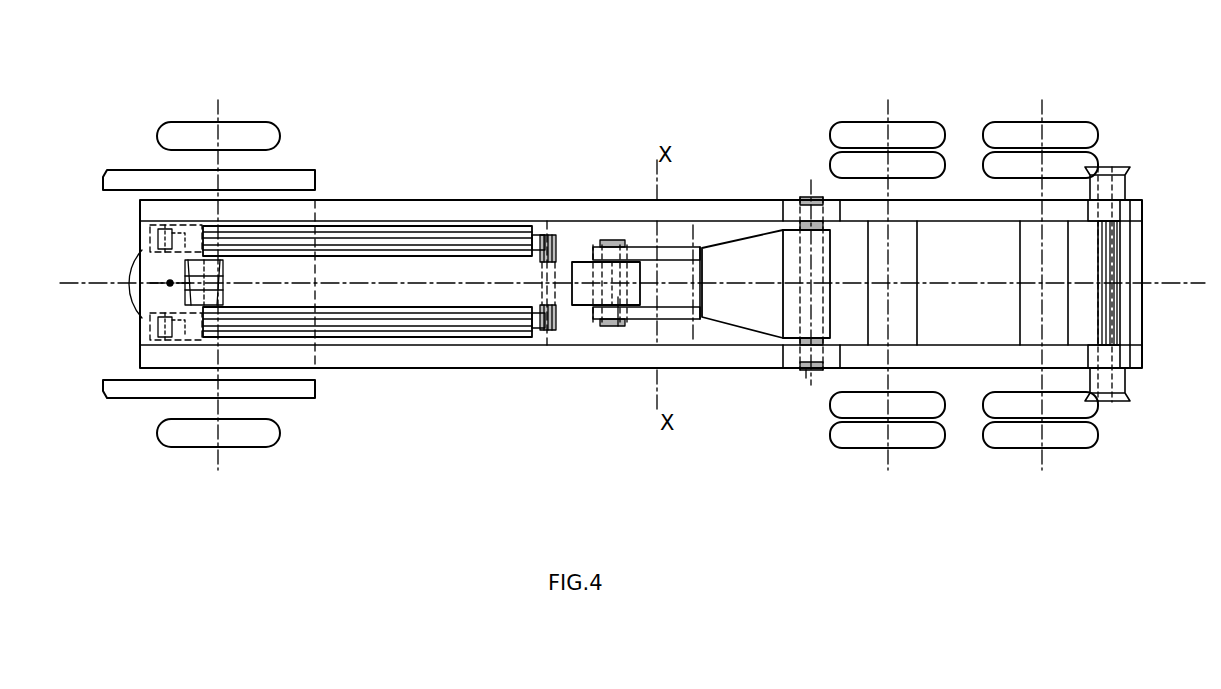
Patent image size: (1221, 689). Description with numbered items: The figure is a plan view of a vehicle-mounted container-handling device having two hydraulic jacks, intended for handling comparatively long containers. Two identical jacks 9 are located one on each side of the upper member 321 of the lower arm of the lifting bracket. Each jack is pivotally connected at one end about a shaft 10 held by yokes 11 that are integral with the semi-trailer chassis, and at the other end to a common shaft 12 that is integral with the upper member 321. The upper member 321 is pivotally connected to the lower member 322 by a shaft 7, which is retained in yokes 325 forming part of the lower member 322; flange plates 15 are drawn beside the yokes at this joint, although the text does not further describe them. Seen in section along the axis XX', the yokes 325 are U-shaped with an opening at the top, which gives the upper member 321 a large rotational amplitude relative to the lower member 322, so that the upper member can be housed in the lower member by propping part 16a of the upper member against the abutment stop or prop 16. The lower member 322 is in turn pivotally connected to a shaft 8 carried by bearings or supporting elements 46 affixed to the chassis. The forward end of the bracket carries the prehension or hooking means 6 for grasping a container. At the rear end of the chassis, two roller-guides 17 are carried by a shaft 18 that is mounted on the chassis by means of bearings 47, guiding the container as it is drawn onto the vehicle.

The prehension or hooking means 6 is at (218, 279).
The shaft 7 is at (618, 297).
The shaft 8 is at (806, 372).
The jacks 9 is at (385, 245).
The shaft 10 is at (163, 310).
The yokes 11 is at (165, 232).
The common shaft 12 is at (553, 272).
The flange plates 15 is at (635, 247).
The abutment stop or prop 16 is at (727, 280).
The part of upper member 16a is at (567, 282).
The roller-guides 17 is at (1122, 183).
The shaft 18 is at (1110, 300).
The bearings 46 is at (793, 200).
The bearings 47 is at (1122, 212).
The upper member 321 is at (450, 283).
The lower member 322 is at (753, 293).
The yokes 325 is at (645, 300).